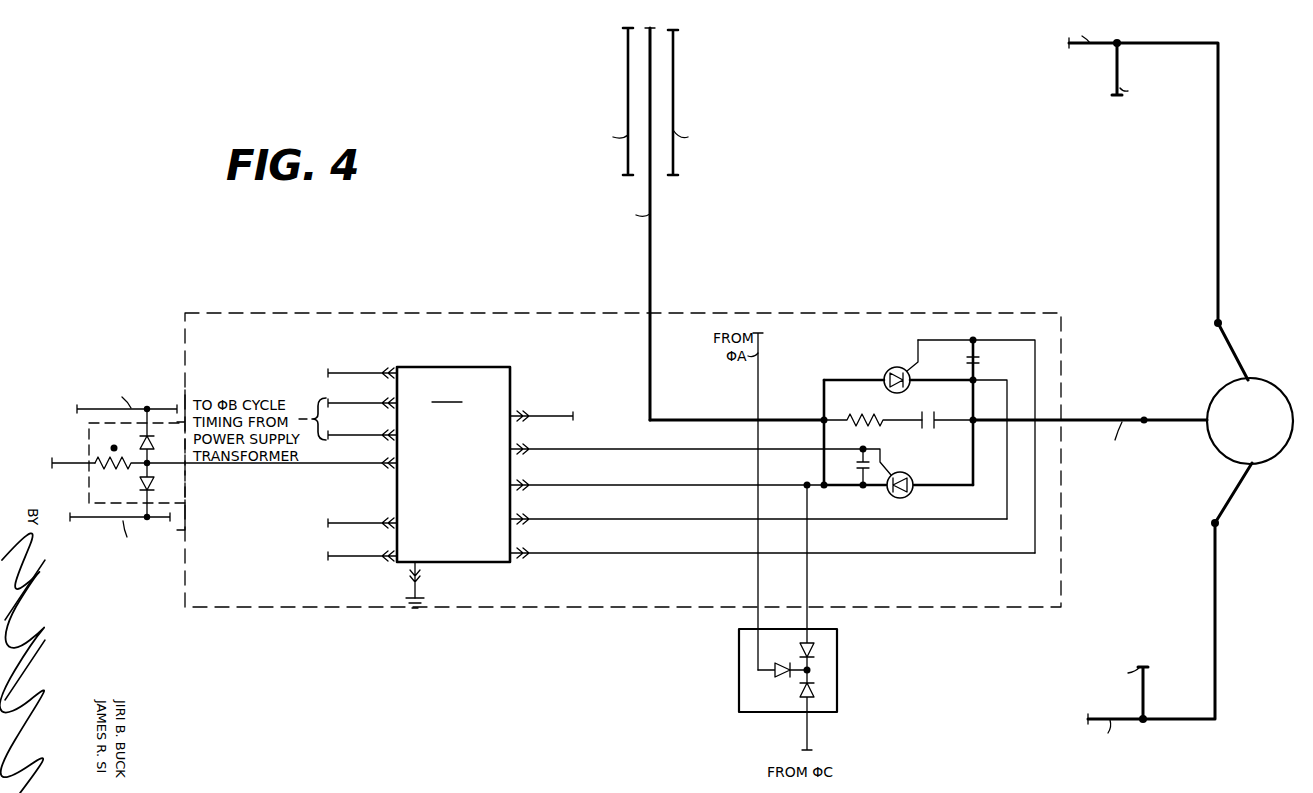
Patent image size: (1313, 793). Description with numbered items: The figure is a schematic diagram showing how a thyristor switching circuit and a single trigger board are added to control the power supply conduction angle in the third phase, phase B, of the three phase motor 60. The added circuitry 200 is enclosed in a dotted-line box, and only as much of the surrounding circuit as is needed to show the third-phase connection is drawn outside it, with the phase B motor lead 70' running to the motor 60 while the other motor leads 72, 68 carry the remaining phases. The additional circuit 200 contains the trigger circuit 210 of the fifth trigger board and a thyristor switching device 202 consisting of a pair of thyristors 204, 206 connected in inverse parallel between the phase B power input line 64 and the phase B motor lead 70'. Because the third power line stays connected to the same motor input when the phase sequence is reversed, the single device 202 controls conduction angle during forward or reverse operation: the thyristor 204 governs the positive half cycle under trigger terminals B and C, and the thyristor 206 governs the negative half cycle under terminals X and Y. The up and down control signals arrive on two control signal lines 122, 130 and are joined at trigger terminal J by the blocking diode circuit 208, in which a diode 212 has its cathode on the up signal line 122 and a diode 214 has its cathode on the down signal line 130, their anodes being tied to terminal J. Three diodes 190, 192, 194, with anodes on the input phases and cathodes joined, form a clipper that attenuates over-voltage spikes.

The additional circuit 200 is at (388, 303).
The up control signal line 122 is at (99, 408).
The down control signal line 130 is at (101, 520).
The blocking diode circuit 208 is at (86, 480).
The diode 212 is at (150, 443).
The diode 214 is at (150, 486).
The trigger circuit 210 is at (678, 480).
The phase B power input line 64 is at (650, 272).
The phase B motor lead 70' is at (928, 421).
The thyristor switching device 202 is at (860, 395).
The thyristor 204 is at (896, 367).
The thyristor 206 is at (912, 494).
The three phase motor 60 is at (1232, 383).
The upper motor lead 72 is at (1165, 43).
The lower motor lead 68 is at (1203, 720).
The diode 190 is at (778, 672).
The diode 192 is at (815, 645).
The diode 194 is at (815, 695).